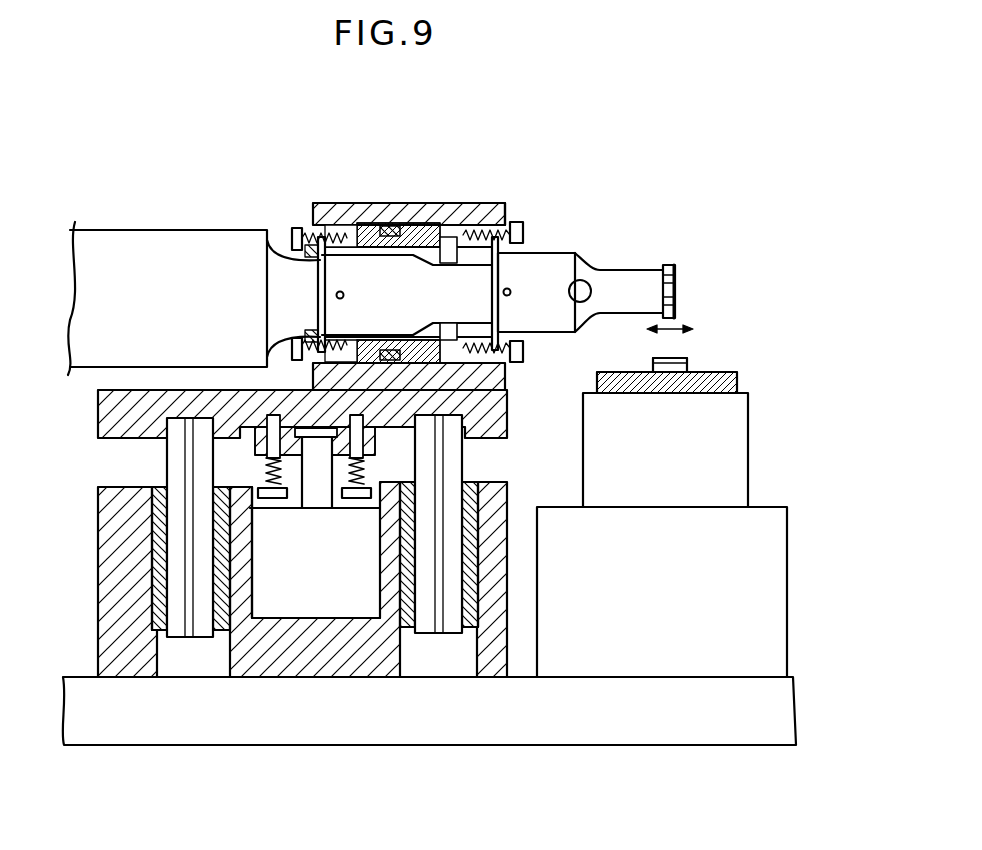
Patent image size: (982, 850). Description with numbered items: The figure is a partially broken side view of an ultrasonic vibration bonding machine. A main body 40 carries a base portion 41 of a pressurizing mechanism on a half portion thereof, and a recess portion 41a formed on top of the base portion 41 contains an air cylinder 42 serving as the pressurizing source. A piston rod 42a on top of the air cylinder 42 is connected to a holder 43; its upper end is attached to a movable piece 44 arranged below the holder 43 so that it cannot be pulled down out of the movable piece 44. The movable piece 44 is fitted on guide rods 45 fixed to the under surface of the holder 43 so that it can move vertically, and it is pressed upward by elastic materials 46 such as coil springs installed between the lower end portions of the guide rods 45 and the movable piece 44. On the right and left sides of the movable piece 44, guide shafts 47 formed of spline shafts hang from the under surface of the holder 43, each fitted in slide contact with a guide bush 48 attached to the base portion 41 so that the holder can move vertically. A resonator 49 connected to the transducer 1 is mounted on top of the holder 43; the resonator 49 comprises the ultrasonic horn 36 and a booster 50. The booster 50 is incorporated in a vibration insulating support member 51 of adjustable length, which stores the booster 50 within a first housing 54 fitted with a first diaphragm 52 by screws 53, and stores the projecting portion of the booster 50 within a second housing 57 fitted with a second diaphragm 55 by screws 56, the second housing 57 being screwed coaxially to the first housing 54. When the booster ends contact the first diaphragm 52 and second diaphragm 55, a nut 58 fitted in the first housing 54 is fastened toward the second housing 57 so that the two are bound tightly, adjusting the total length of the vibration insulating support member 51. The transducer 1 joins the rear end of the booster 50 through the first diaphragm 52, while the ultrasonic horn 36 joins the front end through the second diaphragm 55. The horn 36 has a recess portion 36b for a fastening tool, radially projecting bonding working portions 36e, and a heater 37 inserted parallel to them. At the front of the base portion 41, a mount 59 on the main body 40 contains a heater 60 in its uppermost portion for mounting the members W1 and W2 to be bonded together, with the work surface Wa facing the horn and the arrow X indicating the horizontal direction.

The transducer 1 is at (177, 237).
The ultrasonic horn 36 is at (610, 265).
The recess portion 36b is at (511, 297).
The bonding working portions 36e is at (667, 262).
The heater 37 is at (633, 265).
The main body 40 is at (228, 727).
The base portion 41 is at (112, 636).
The recess portion 41a is at (256, 617).
The air cylinder 42 is at (282, 603).
The piston rod 42a is at (312, 505).
The holder 43 is at (376, 245).
The movable piece 44 is at (245, 440).
The guide rods 45 is at (357, 503).
The elastic materials 46 is at (262, 465).
The guide shafts 47 is at (183, 556).
The guide bush 48 is at (157, 593).
The resonator 49 is at (586, 252).
The booster 50 is at (470, 203).
The vibration insulating support member 51 is at (517, 207).
The first diaphragm 52 is at (318, 266).
The screws 53 is at (298, 230).
The first housing 54 is at (350, 235).
The second diaphragm 55 is at (510, 265).
The screws 56 is at (513, 250).
The second housing 57 is at (447, 277).
The nut 58 is at (392, 228).
The mount 59 is at (740, 432).
The heater 60 is at (745, 393).
The member to be bonded W1 is at (700, 378).
The member to be bonded W2 is at (688, 360).
The work surface Wa is at (663, 358).
The direction of movement X is at (680, 325).